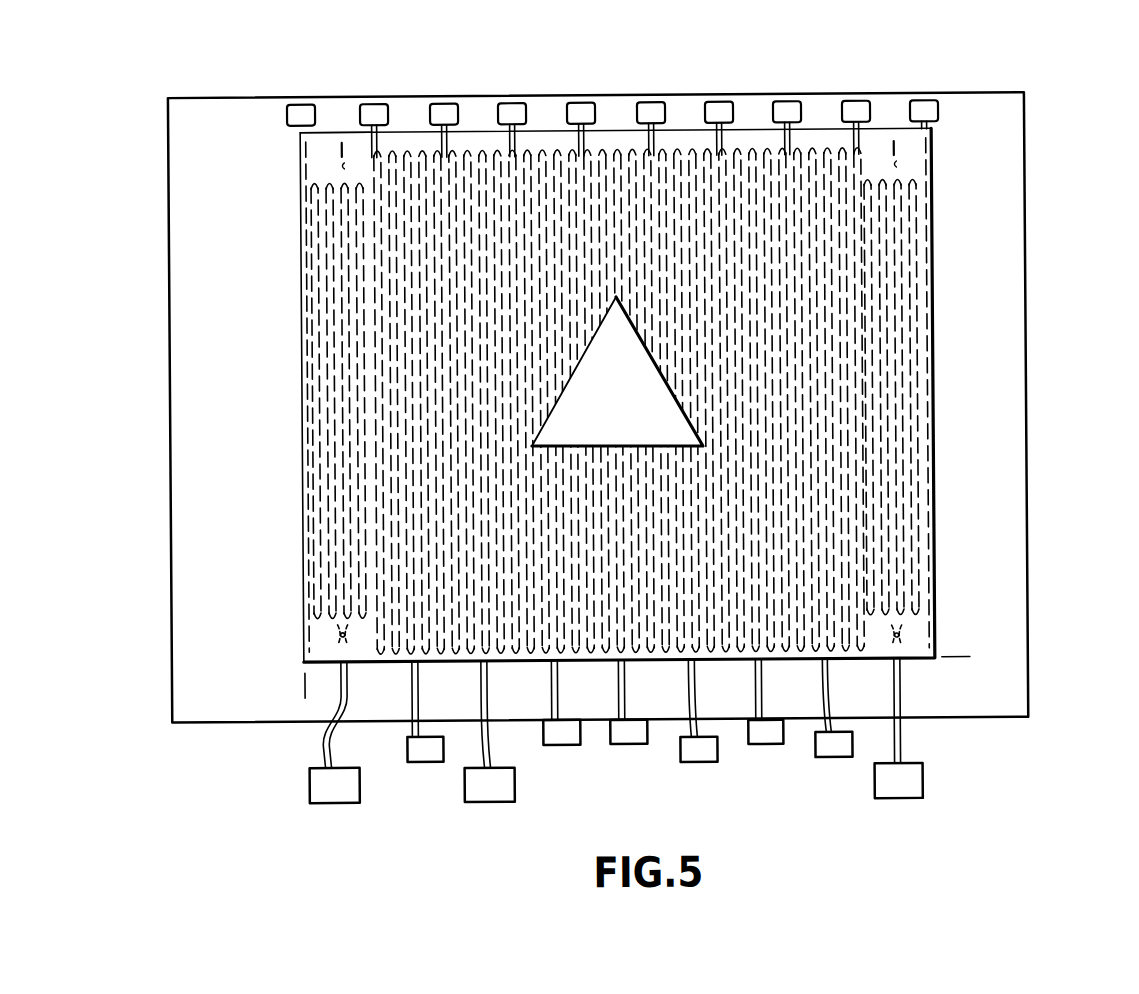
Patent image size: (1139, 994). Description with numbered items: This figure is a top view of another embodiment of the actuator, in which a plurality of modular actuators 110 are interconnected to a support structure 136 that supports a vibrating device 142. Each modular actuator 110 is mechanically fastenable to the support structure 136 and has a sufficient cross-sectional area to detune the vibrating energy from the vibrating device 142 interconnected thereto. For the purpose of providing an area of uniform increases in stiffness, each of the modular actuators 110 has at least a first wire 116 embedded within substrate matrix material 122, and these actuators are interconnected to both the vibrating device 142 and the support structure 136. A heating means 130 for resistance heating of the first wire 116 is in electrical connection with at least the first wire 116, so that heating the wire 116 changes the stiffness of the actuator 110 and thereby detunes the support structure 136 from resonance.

The modular actuator 110 is at (555, 112).
The first wire 116 is at (400, 126).
The substrate matrix material 122 is at (334, 112).
The heating means 130 is at (310, 106).
The support structure 136 is at (1026, 135).
The vibrating device 142 is at (593, 413).